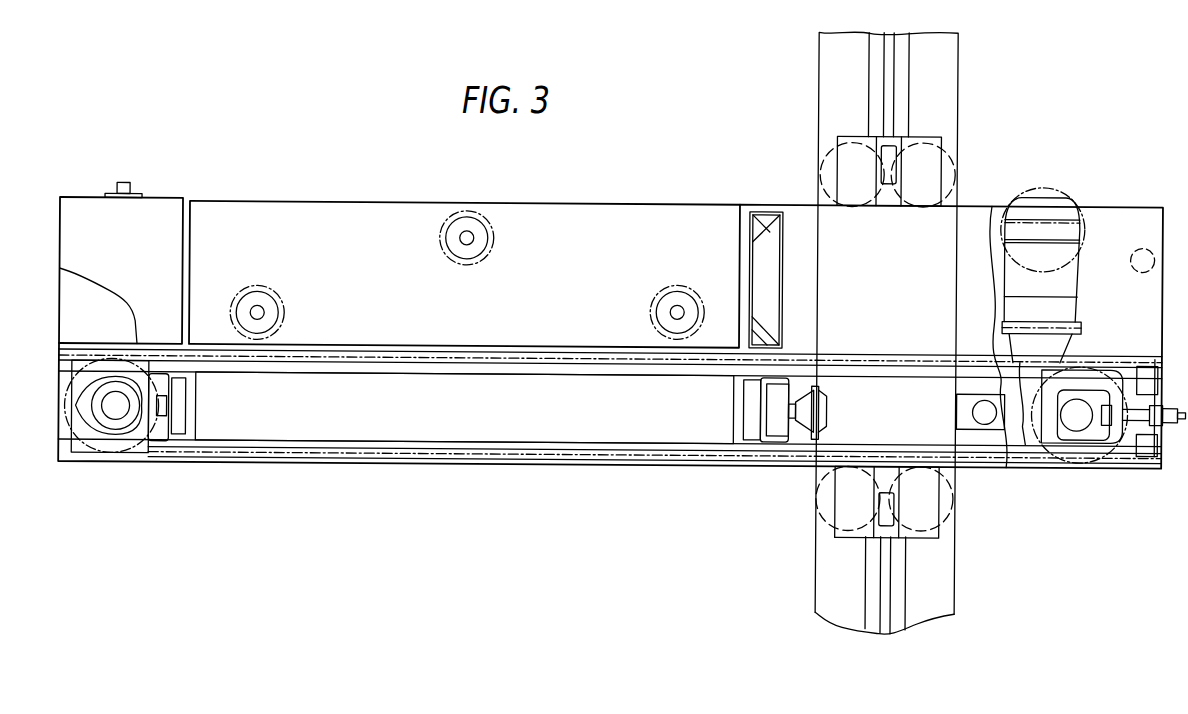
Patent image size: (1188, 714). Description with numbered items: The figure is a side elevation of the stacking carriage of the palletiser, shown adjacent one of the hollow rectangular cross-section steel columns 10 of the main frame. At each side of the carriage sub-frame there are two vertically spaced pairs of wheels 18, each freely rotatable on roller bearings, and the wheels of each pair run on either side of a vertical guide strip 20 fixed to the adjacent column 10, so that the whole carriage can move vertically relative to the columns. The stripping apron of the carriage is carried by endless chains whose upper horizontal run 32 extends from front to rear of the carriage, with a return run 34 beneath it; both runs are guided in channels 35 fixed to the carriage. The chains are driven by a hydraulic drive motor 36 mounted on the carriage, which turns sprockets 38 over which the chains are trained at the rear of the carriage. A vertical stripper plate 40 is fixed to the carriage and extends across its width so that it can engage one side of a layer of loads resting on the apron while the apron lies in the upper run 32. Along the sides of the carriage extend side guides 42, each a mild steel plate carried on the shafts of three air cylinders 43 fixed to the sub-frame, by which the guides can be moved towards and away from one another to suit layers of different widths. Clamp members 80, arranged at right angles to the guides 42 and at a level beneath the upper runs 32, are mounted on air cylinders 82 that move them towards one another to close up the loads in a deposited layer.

The column 10 is at (939, 112).
The wheels 18 is at (828, 163).
The vertical guide strip 20 is at (891, 79).
The upper horizontal run 32 is at (571, 354).
The return run 34 is at (650, 447).
The channels 35 is at (378, 366).
The hydraulic drive motor 36 is at (1052, 215).
The sprockets 38 is at (1035, 443).
The vertical stripper plate 40 is at (748, 223).
The side guide 42 is at (245, 214).
The air cylinders 43 is at (262, 286).
The clamp members 80 is at (170, 407).
The air cylinders 82 is at (828, 400).